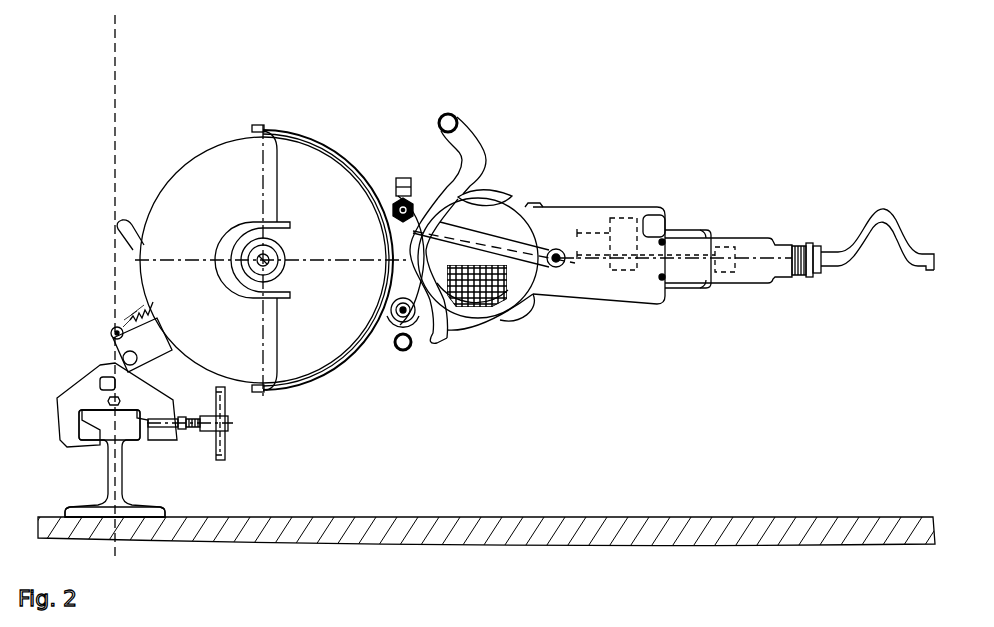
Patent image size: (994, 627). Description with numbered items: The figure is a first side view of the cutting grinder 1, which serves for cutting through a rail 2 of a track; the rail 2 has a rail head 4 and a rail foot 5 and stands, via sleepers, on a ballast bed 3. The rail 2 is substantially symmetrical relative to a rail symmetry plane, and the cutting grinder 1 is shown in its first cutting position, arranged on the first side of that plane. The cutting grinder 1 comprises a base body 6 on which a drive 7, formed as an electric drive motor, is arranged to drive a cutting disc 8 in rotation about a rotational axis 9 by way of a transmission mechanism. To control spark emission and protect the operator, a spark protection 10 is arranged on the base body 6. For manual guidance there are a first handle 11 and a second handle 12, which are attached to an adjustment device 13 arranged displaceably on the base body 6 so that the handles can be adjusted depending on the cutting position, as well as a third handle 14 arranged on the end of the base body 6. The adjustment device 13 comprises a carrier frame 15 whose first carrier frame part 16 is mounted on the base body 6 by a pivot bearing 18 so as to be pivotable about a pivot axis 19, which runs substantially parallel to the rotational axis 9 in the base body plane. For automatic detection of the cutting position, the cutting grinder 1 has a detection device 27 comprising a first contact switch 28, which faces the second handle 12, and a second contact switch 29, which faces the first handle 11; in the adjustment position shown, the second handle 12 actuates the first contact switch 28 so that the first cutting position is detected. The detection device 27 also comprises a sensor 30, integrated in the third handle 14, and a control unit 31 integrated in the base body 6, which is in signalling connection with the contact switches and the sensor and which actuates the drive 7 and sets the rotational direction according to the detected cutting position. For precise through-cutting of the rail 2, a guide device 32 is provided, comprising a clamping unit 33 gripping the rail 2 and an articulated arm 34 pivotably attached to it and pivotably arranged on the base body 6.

The cutting grinder 1 is at (552, 90).
The rail 2 is at (103, 475).
The ballast bed 3 is at (482, 531).
The rail head 4 is at (100, 422).
The rail foot 5 is at (92, 509).
The base body 6 is at (634, 207).
The drive 7 is at (491, 206).
The cutting disc 8 is at (223, 160).
The rotational axis 9 is at (276, 352).
The spark protection 10 is at (290, 368).
The first handle 11 is at (453, 116).
The second handle 12 is at (400, 325).
The adjustment device 13 is at (523, 277).
The third handle 14 is at (777, 254).
The carrier frame 15 is at (446, 342).
The first carrier frame part 16 is at (427, 345).
The pivot bearing 18 is at (560, 262).
The pivot axis 19 is at (557, 264).
The detection device 27 is at (388, 178).
The first contact switch 28 is at (395, 350).
The second contact switch 29 is at (402, 175).
The sensor 30 is at (723, 247).
The control unit 31 is at (620, 218).
The guide device 32 is at (100, 328).
The clamping unit 33 is at (75, 395).
The articulated arm 34 is at (115, 343).